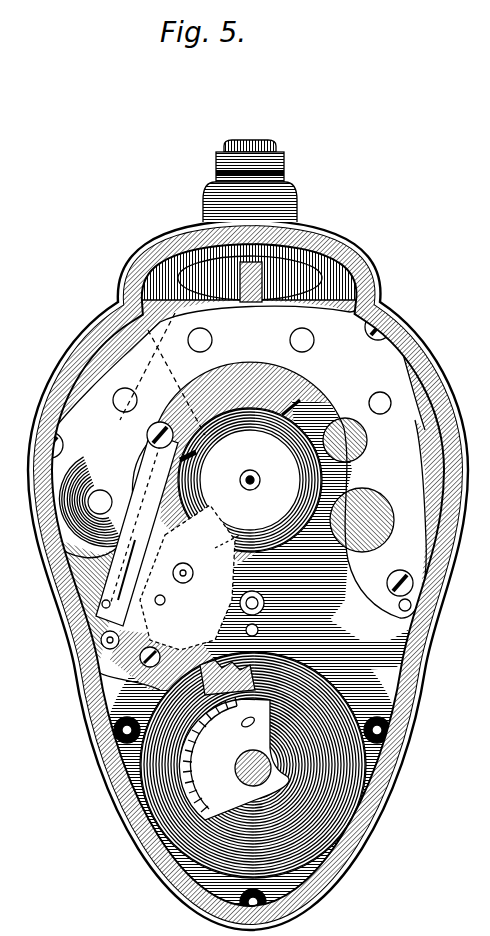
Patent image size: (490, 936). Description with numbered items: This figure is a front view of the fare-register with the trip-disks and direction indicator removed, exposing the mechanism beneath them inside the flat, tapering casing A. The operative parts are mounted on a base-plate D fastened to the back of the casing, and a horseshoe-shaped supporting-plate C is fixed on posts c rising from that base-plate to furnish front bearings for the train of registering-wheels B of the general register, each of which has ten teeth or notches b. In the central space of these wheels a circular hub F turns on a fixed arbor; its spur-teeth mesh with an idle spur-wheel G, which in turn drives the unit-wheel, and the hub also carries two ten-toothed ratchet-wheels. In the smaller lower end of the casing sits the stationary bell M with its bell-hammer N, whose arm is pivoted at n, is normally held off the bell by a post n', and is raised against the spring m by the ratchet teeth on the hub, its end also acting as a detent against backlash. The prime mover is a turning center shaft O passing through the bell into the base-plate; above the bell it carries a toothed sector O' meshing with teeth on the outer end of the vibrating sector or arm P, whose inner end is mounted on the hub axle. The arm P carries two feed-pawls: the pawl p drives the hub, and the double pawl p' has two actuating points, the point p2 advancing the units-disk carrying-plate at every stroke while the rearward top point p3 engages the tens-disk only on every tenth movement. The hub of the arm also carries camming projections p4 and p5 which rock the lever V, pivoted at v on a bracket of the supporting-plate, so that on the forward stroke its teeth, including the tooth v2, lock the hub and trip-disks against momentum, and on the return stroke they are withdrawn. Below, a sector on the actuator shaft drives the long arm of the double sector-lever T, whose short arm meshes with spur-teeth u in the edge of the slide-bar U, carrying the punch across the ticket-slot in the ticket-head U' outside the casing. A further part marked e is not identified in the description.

The casing A is at (248, 575).
The registering-wheels B is at (235, 504).
The teeth or notches b is at (378, 364).
The supporting-plate C is at (231, 519).
The base-plate D is at (315, 536).
The circular hub F is at (349, 485).
The idle spur-wheel G is at (137, 529).
The bell M is at (253, 691).
The spring m is at (260, 664).
The bell-hammer N is at (160, 690).
The pivot n is at (227, 549).
The post or projection n' is at (227, 613).
The turning center shaft O is at (234, 758).
The toothed sector O' is at (248, 722).
The sector or arm P is at (250, 480).
The feed-pawl p is at (190, 574).
The double pawl p' is at (136, 648).
The actuating-point p2 is at (169, 651).
The actuating-point p3 is at (227, 677).
The camming-projection p4 is at (271, 419).
The camming-projection p5 is at (196, 467).
The double sector-lever T is at (151, 605).
The slide-bar U is at (260, 496).
The ticket-head U' is at (262, 181).
The spur-teeth u is at (250, 272).
The lever V is at (124, 570).
The pivot v is at (156, 441).
The tooth v2 is at (104, 601).
The posts c is at (244, 775).
The tooth e is at (235, 688).